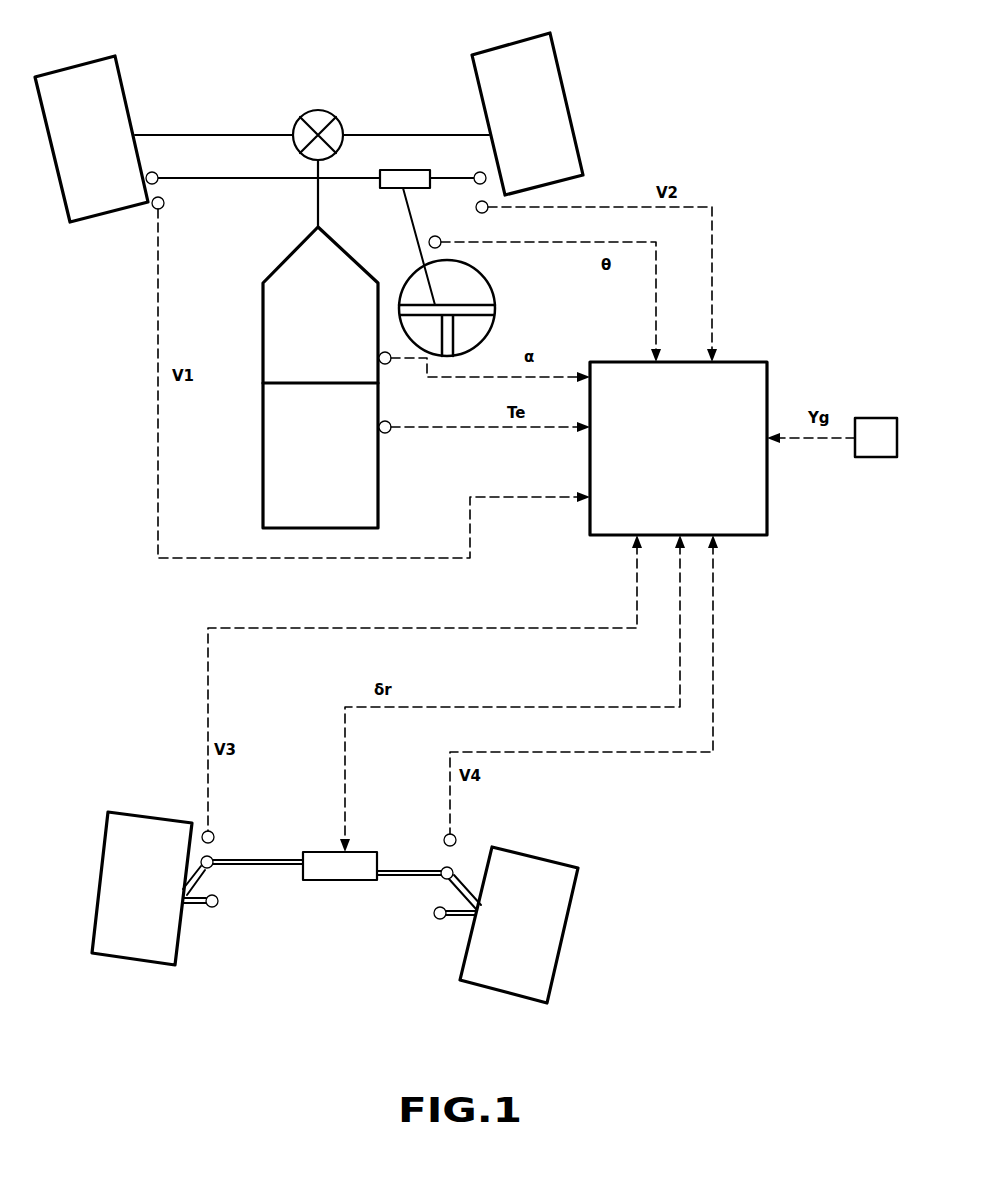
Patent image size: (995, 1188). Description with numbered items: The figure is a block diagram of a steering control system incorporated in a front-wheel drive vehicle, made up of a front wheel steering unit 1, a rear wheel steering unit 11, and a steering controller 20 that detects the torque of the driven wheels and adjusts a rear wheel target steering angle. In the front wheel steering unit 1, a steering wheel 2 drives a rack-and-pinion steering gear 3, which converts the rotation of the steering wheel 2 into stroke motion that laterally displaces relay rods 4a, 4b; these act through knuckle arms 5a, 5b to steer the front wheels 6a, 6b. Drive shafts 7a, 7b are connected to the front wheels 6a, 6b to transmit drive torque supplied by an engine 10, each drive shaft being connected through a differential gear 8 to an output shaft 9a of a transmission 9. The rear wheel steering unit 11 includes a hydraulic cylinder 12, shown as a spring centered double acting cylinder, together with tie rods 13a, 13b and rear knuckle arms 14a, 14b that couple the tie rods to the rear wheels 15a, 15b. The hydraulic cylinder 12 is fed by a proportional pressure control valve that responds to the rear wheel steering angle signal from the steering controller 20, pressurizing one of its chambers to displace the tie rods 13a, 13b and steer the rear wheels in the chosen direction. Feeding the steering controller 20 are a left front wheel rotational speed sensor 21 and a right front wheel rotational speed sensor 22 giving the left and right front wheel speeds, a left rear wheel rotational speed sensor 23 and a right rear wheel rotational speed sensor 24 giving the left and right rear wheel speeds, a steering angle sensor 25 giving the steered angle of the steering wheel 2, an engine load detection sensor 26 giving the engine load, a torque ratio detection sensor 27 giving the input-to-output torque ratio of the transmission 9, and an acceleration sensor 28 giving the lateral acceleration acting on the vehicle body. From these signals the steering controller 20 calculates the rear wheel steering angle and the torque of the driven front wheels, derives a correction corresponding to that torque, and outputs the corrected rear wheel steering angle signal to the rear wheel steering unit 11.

The front wheel steering unit 1 is at (300, 57).
The steering wheel 2 is at (492, 294).
The rack-and-pinion steering gear 3 is at (405, 170).
The relay rod 4a is at (226, 179).
The relay rod 4b is at (447, 176).
The knuckle arm 5a is at (156, 172).
The knuckle arm 5b is at (492, 154).
The front wheel 6a is at (126, 72).
The front wheel 6b is at (545, 60).
The drive shaft 7a is at (193, 135).
The drive shaft 7b is at (392, 135).
The differential gear 8 is at (318, 110).
The transmission 9 is at (262, 315).
The output shaft 9a is at (316, 204).
The engine 10 is at (262, 438).
The rear wheel steering unit 11 is at (305, 920).
The hydraulic cylinder 12 is at (338, 880).
The tie rod 13a is at (283, 866).
The tie rod 13b is at (406, 877).
The rear knuckle arm 14a is at (200, 876).
The rear knuckle arm 14b is at (462, 880).
The rear wheel 15a is at (138, 966).
The rear wheel 15b is at (498, 993).
The steering controller 20 is at (737, 362).
The left front wheel rotational speed sensor 21 is at (152, 207).
The right front wheel rotational speed sensor 22 is at (485, 213).
The left rear wheel rotational speed sensor 23 is at (214, 833).
The right rear wheel rotational speed sensor 24 is at (456, 838).
The steering angle sensor 25 is at (440, 236).
The engine load detection sensor 26 is at (390, 422).
The torque ratio detection sensor 27 is at (388, 364).
The acceleration sensor 28 is at (871, 418).